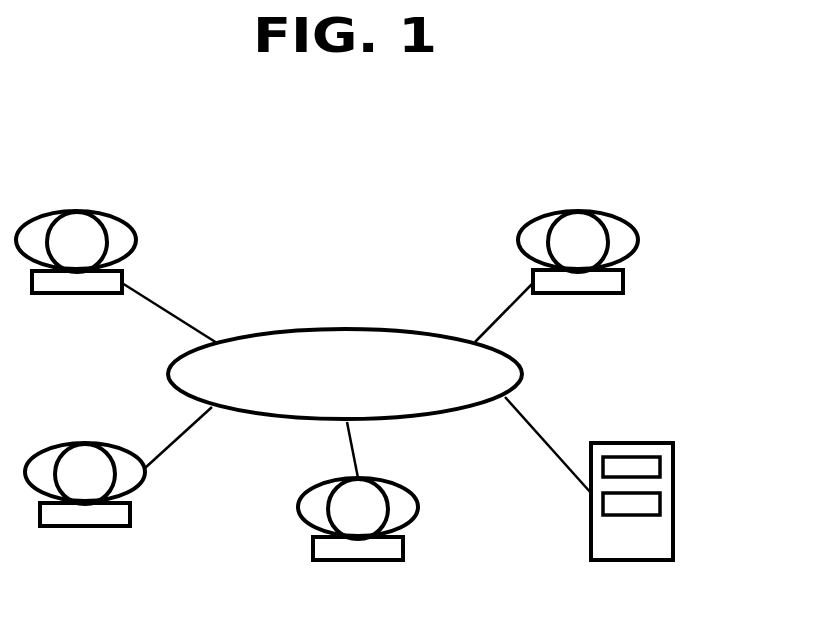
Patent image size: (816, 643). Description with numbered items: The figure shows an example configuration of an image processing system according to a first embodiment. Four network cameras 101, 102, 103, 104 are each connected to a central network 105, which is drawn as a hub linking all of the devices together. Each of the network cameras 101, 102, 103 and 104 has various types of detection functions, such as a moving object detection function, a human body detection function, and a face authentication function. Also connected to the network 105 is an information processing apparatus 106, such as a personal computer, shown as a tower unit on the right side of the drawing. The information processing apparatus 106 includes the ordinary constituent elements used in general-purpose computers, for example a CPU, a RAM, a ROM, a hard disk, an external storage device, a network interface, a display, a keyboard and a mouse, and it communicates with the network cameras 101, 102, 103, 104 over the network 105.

The network camera 101 is at (118, 220).
The network camera 102 is at (102, 445).
The network camera 103 is at (623, 219).
The network camera 104 is at (405, 483).
The network 105 is at (522, 362).
The information processing apparatus 106 is at (675, 483).